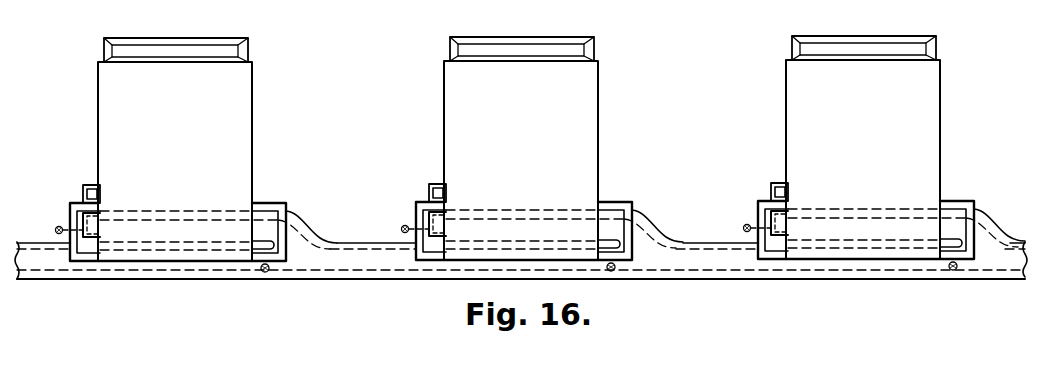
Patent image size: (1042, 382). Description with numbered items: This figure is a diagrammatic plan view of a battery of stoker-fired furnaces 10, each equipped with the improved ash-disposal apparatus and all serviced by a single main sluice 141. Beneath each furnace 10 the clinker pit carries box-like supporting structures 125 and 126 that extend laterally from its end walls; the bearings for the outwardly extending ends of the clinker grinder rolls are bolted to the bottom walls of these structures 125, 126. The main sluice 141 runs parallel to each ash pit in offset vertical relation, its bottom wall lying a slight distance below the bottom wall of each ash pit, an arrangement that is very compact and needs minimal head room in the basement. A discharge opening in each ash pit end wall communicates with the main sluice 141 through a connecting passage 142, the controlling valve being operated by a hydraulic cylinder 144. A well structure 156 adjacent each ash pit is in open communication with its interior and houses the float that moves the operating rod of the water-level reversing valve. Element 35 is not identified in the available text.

The furnace 10 is at (98, 109).
The box-like supporting structure 125 is at (74, 203).
The box-like supporting structure 126 is at (287, 181).
The well structure 156 is at (93, 185).
The cable 35 is at (190, 222).
The connecting passage 142 is at (302, 233).
The main sluice 141 is at (353, 248).
The hydraulic cylinder 144 is at (263, 272).